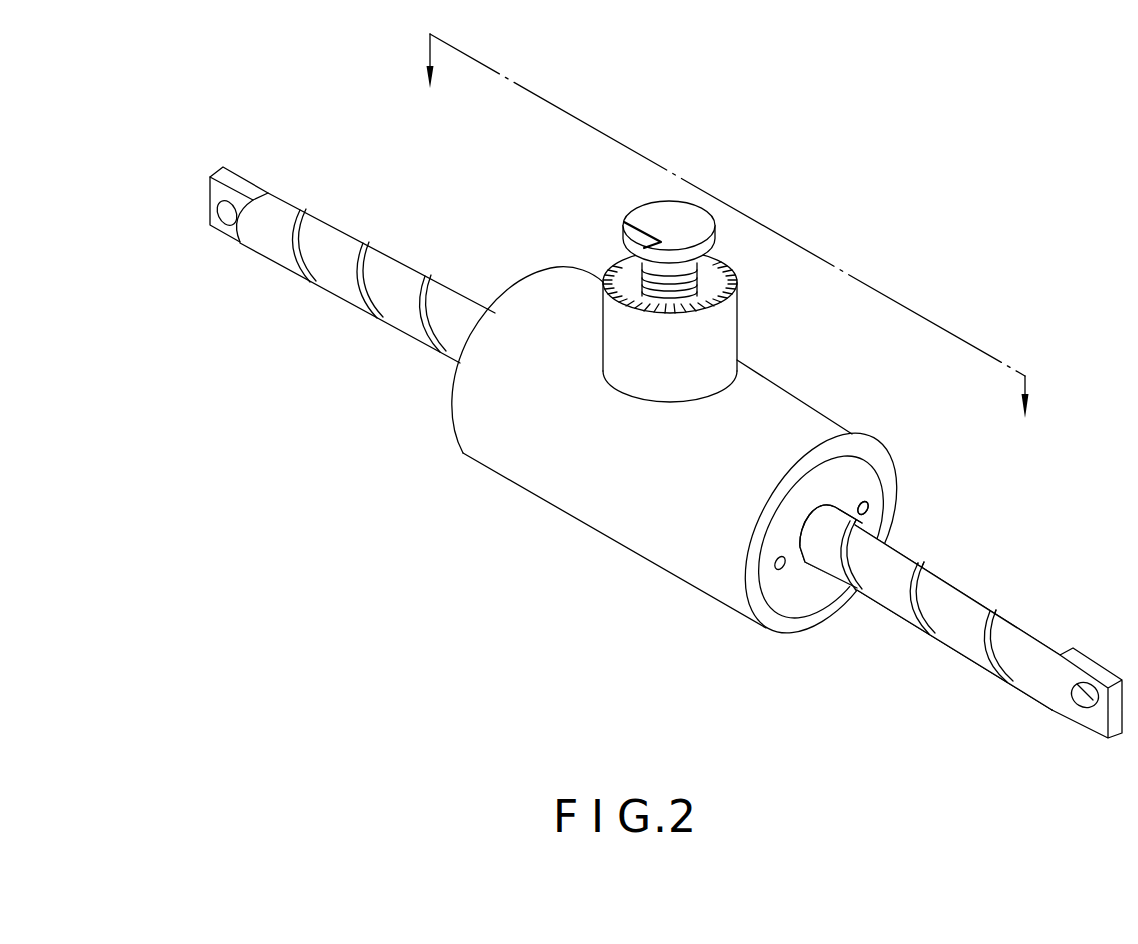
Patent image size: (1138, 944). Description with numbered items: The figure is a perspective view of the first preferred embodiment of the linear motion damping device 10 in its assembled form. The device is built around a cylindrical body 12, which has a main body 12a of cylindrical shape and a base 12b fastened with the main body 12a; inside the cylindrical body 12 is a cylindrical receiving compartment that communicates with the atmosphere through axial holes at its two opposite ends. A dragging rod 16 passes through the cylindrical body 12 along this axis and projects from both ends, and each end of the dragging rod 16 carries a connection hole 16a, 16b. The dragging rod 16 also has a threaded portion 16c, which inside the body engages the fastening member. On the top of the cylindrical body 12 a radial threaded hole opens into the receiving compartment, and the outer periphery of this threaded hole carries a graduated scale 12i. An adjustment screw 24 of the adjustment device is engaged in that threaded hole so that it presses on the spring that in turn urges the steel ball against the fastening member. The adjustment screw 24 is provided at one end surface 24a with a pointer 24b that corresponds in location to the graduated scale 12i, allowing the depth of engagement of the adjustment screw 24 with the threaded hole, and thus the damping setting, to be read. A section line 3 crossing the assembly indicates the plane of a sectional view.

The section line 3- 3 is at (725, 230).
The linear motion damping device 10 is at (506, 570).
The cylindrical body 12 is at (724, 463).
The main body 12a is at (833, 423).
The base 12b is at (853, 477).
The graduated scale 12i is at (605, 278).
The dragging rod 16 is at (635, 482).
The connection hole 16a is at (1080, 700).
The connection hole 16b is at (222, 228).
The threaded portion 16c is at (915, 630).
The adjustment screw 24 is at (683, 280).
The end surface 24a is at (637, 210).
The pointer 24b is at (610, 224).